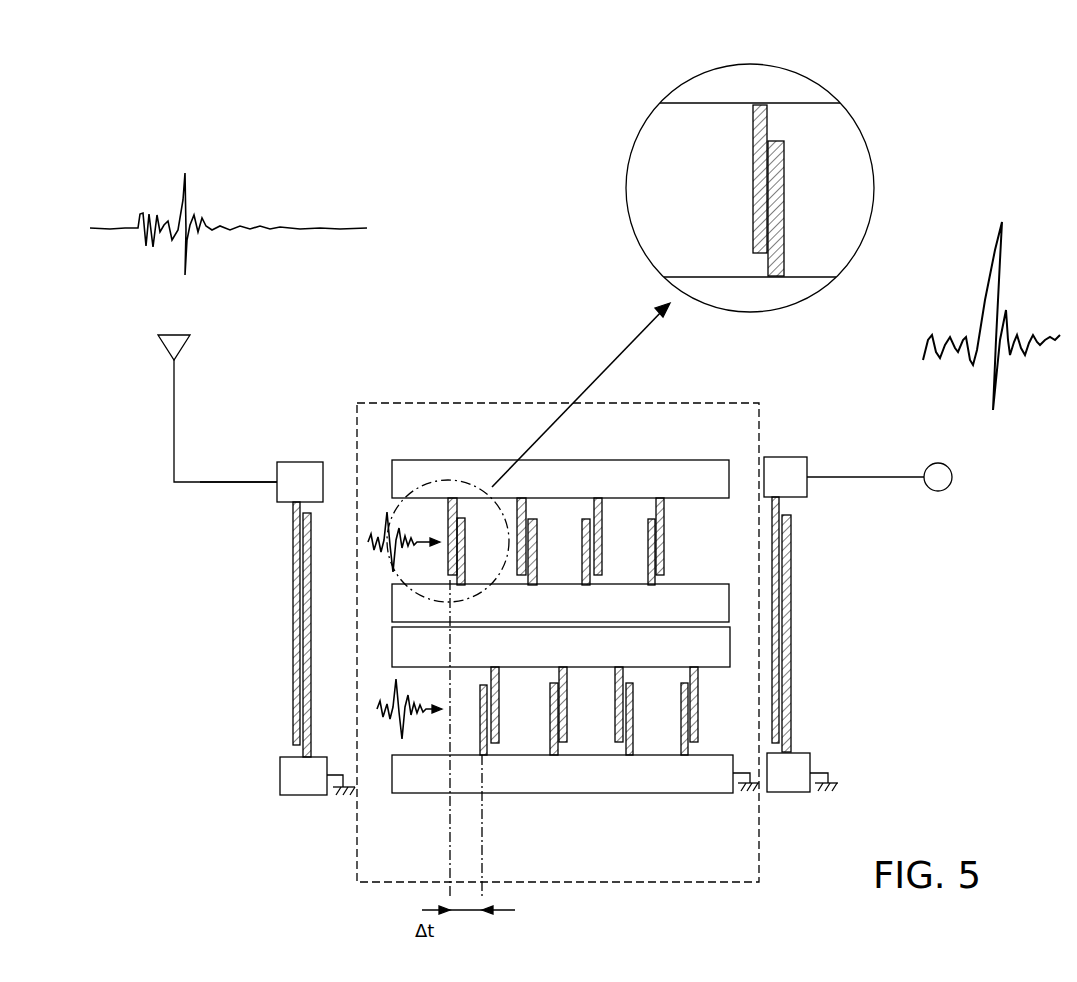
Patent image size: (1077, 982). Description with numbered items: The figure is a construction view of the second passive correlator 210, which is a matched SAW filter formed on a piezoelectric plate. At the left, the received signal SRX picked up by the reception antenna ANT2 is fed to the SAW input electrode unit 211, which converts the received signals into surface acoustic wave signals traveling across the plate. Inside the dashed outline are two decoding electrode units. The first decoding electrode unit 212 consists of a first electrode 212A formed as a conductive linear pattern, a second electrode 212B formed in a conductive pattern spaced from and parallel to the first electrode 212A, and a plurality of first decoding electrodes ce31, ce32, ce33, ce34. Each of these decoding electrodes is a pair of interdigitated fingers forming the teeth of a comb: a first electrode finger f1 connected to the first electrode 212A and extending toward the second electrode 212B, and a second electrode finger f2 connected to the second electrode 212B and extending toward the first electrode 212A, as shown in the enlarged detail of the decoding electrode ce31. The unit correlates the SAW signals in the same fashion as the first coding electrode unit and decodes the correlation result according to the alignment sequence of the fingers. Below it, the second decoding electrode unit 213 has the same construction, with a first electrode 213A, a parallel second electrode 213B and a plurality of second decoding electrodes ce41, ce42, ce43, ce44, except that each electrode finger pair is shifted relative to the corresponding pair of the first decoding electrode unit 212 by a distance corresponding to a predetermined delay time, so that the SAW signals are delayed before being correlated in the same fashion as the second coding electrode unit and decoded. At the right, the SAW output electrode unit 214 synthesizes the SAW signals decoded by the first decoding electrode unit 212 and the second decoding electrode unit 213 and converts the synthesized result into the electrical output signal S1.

The second passive correlator 210 is at (428, 298).
The SAW input electrode unit 211 is at (276, 507).
The first decoding electrode unit 212 is at (502, 403).
The first electrode 212A is at (412, 465).
The second electrode 212B is at (700, 587).
The second decoding electrode unit 213 is at (618, 882).
The first electrode 213A is at (712, 660).
The second electrode 213B is at (655, 788).
The SAW output electrode unit 214 is at (810, 505).
The first decoding electrode ce31 is at (657, 345).
The first decoding electrode ce32 is at (549, 541).
The first decoding electrode ce33 is at (615, 541).
The first decoding electrode ce34 is at (682, 541).
The second decoding electrode ce41 is at (513, 711).
The second decoding electrode ce42 is at (582, 711).
The second decoding electrode ce43 is at (647, 711).
The second decoding electrode ce44 is at (712, 711).
The first electrode finger f1 is at (757, 153).
The second electrode finger f2 is at (777, 232).
The reception antenna ANT2 is at (210, 395).
The received signal SRX is at (233, 469).
The sensing signal S1 is at (879, 463).